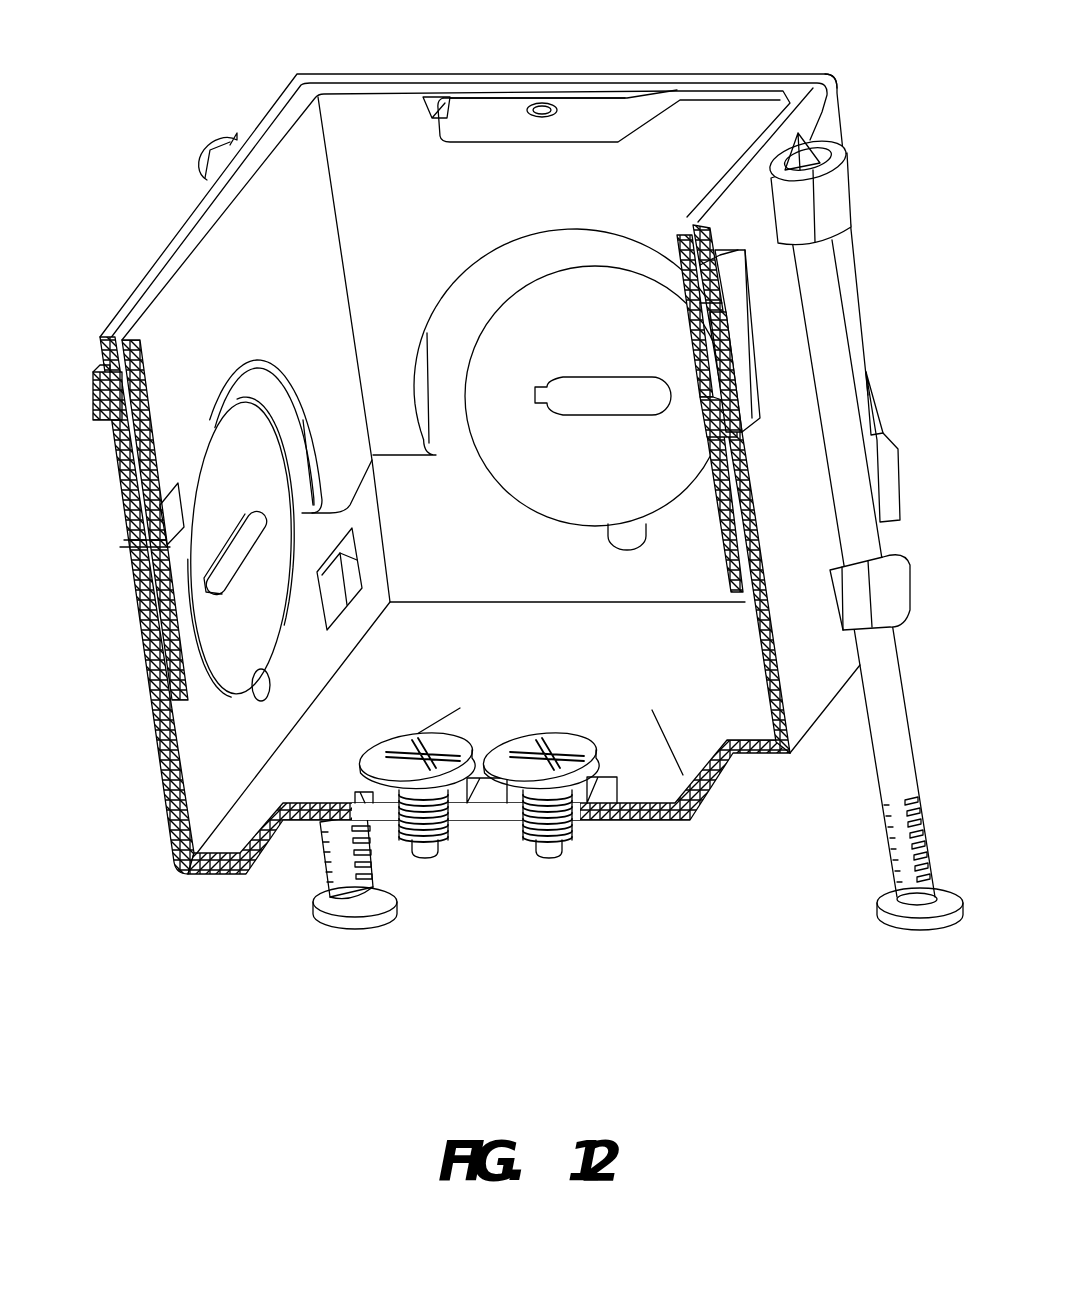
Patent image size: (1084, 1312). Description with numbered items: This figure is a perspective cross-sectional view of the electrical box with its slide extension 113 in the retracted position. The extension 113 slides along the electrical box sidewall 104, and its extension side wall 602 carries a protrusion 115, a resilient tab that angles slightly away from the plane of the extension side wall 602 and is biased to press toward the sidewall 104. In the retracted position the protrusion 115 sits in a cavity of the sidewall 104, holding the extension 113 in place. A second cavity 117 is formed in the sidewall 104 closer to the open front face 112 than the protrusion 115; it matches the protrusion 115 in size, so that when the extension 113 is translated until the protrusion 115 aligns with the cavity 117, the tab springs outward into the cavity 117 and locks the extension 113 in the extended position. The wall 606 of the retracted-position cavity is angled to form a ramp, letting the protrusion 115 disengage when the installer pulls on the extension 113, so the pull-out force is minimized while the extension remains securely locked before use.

The electrical box sidewall 104 is at (787, 507).
The open front face 112 is at (805, 87).
The extension 113 is at (397, 120).
The protrusion 115 is at (745, 420).
The cavity 117 is at (718, 292).
The extension side wall 602 is at (680, 246).
The wall of cavity 606 is at (738, 368).